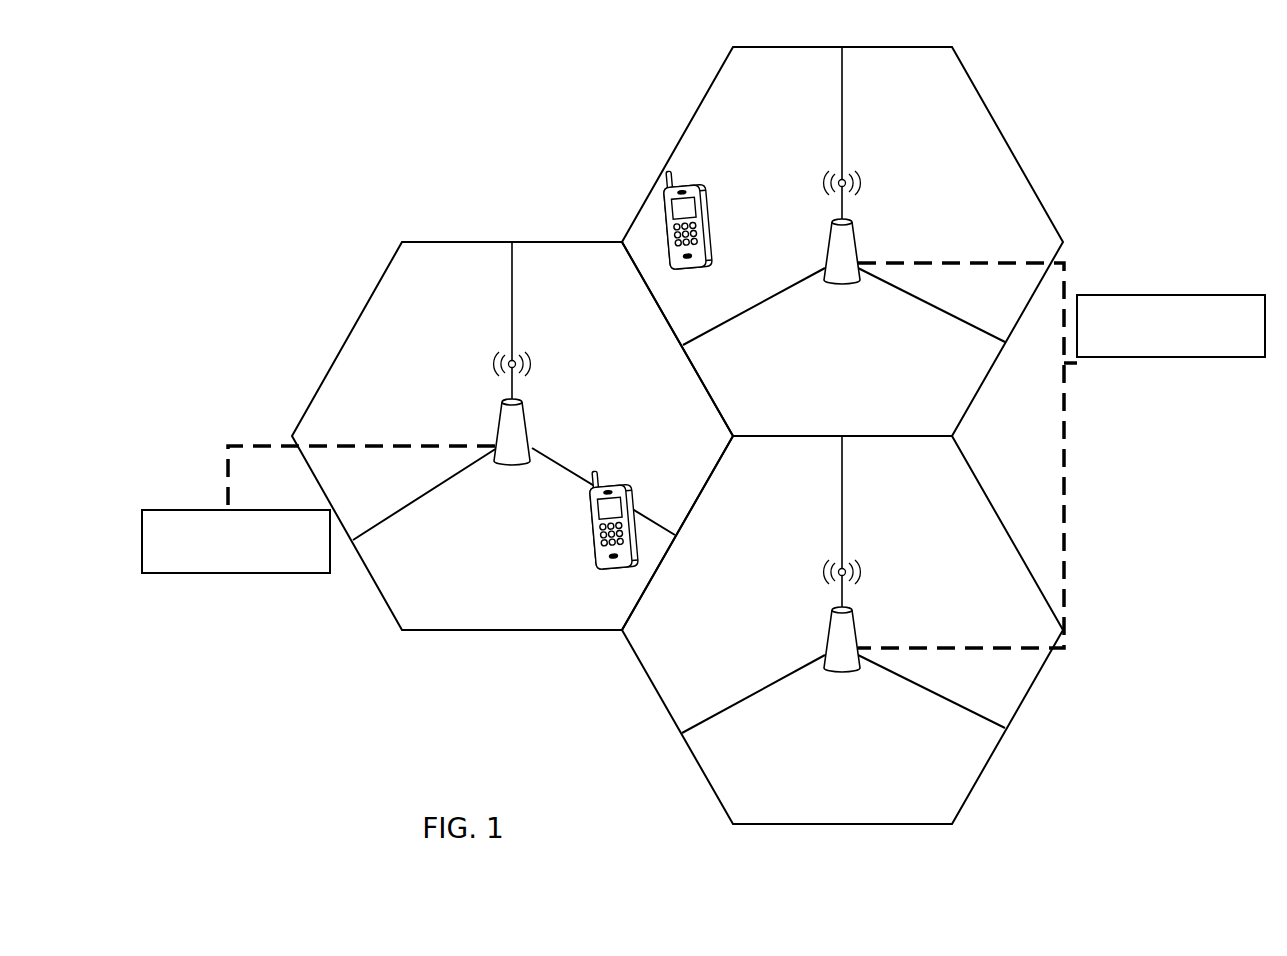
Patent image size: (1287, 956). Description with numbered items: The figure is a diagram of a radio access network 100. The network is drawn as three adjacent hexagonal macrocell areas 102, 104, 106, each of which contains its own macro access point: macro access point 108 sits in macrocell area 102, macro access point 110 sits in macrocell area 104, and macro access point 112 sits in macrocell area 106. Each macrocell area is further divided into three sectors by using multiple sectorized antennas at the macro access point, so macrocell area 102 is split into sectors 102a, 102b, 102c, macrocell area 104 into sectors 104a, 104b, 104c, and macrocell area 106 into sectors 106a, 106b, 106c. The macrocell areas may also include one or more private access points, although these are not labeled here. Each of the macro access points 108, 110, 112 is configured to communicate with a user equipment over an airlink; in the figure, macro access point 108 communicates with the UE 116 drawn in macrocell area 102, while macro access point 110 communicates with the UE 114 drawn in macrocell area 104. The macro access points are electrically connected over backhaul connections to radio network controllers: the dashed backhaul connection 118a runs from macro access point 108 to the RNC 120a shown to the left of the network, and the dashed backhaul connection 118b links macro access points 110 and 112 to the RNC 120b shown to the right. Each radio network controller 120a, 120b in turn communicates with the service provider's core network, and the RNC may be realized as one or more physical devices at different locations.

The radio access network 100 is at (322, 128).
The macrocell area 102 is at (376, 283).
The sector 102a is at (393, 400).
The sector 102b is at (583, 400).
The sector 102c is at (495, 575).
The macrocell area 104 is at (1010, 150).
The sector 104a is at (727, 203).
The sector 104b is at (917, 203).
The sector 104c is at (828, 377).
The macrocell area 106 is at (684, 740).
The sector 106a is at (727, 597).
The sector 106b is at (917, 597).
The sector 106c is at (828, 770).
The macro access point 108 is at (512, 463).
The macro access point 110 is at (842, 283).
The macro access point 112 is at (842, 670).
The UE 114 is at (708, 246).
The UE 116 is at (612, 570).
The backhaul connection 118a is at (228, 450).
The backhaul connection 118b is at (1065, 540).
The radio network controller 120a is at (180, 560).
The radio network controller 120b is at (1222, 346).